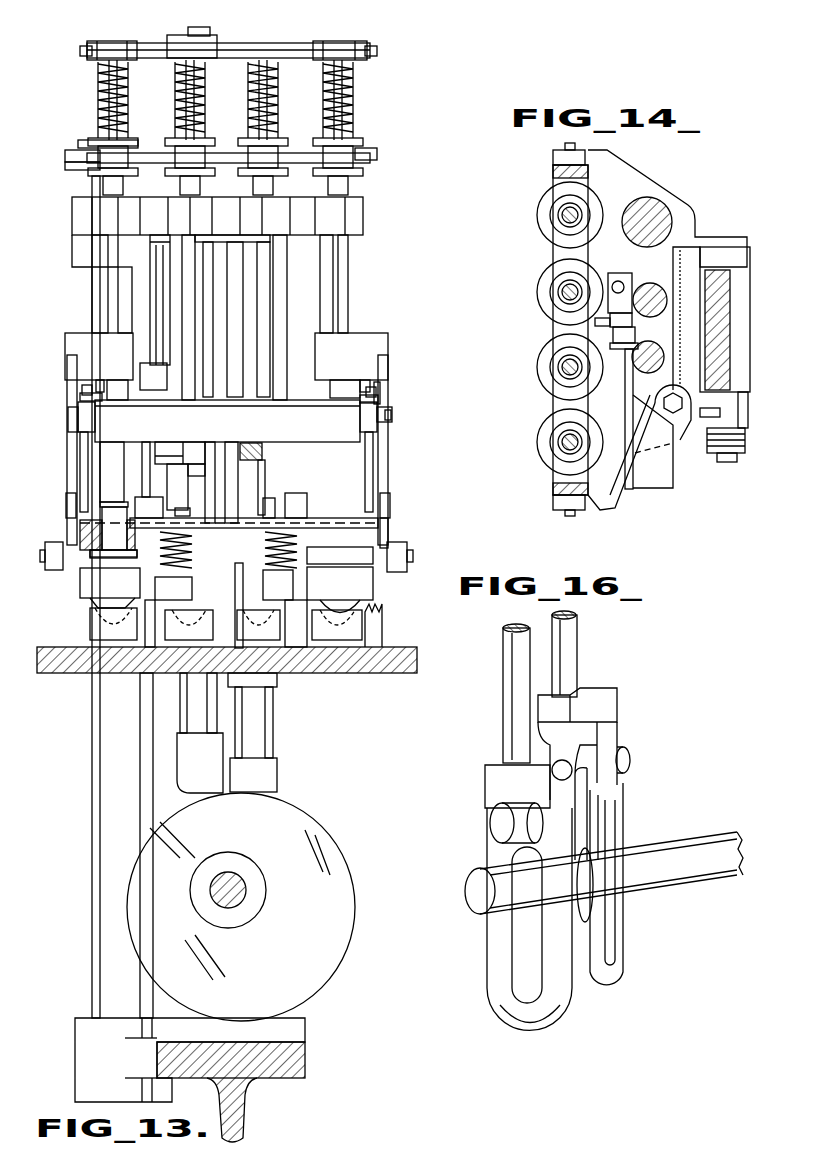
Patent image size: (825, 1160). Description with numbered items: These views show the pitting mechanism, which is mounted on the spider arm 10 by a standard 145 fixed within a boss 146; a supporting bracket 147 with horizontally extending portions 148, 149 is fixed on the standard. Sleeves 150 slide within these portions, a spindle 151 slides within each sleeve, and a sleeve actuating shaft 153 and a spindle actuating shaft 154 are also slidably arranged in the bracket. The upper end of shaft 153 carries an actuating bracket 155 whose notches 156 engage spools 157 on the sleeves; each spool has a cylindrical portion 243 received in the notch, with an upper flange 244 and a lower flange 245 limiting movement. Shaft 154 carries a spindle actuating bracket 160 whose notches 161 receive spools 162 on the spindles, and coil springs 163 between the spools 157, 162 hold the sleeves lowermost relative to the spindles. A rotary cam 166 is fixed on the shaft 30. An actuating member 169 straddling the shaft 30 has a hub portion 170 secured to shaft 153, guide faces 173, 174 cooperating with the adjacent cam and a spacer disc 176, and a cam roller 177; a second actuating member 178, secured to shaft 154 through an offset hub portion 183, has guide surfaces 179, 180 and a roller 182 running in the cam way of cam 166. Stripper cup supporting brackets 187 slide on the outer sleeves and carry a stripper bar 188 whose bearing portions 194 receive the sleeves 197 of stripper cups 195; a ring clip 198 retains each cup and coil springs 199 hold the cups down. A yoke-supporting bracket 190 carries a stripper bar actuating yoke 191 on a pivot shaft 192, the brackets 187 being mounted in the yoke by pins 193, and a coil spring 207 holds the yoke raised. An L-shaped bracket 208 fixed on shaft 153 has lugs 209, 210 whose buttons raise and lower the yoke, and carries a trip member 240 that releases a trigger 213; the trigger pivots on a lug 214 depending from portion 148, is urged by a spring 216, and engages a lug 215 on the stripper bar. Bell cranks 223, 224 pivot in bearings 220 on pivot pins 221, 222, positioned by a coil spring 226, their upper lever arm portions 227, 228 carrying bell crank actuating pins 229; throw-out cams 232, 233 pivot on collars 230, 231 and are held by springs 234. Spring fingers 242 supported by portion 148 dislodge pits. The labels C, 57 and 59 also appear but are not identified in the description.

In FIG. 13, the spindle actuating bracket 160 is at (236, 44).
In FIG. 13, the notches 161 is at (88, 50).
In FIG. 13, the spools 162 is at (115, 42).
In FIG. 13, the coil springs 163 is at (100, 88).
In FIG. 13, the spindle 151 is at (120, 115).
In FIG. 13, the actuating bracket 155 is at (152, 155).
In FIG. 13, the spools 157 is at (168, 175).
In FIG. 13, the notches 156 is at (372, 152).
In FIG. 13, the upper flange 244 is at (78, 142).
In FIG. 13, the cylindrical portion 243 is at (65, 154).
In FIG. 13, the lower flange 245 is at (80, 168).
In FIG. 13, the horizontally extending portion 149 is at (365, 225).
In FIG. 13, the supporting bracket 147 is at (280, 272).
In FIG. 13, the carriage C is at (358, 278).
In FIG. 13, the standard 145 is at (130, 287).
In FIG. 14, the standard 145 is at (660, 205).
In FIG. 13, the spindle actuating shaft 154 is at (207, 298).
In FIG. 14, the spindle actuating shaft 154 is at (665, 280).
In FIG. 16, the spindle actuating shaft 154 is at (578, 652).
In FIG. 13, the sleeve actuating shaft 153 is at (248, 332).
In FIG. 14, the sleeve actuating shaft 153 is at (655, 345).
In FIG. 16, the sleeve actuating shaft 153 is at (508, 706).
In FIG. 13, the sleeves 150 is at (118, 328).
In FIG. 13, the bell crank actuating pins 229 is at (108, 382).
In FIG. 13, the collar 231 is at (97, 382).
In FIG. 13, the throw-out cam 233 is at (82, 387).
In FIG. 13, the upper lever arm portion 228 is at (80, 397).
In FIG. 13, the collar 230 is at (362, 380).
In FIG. 13, the throw-out cam 232 is at (374, 390).
In FIG. 13, the upper lever arm portion 227 is at (376, 398).
In FIG. 13, the springs 234 is at (380, 394).
In FIG. 13, the horizontally extending portion 148 is at (318, 434).
In FIG. 13, the pivot pin 222 is at (80, 415).
In FIG. 13, the bearings 220 is at (70, 418).
In FIG. 13, the pivot pin 221 is at (392, 414).
In FIG. 13, the coil spring 226 is at (392, 412).
In FIG. 13, the stripper cup supporting brackets 187 is at (68, 430).
In FIG. 13, the bell crank 224 is at (82, 458).
In FIG. 13, the bell crank 223 is at (372, 460).
In FIG. 13, the spring fingers 242 is at (124, 458).
In FIG. 14, the spring fingers 242 is at (570, 224).
In FIG. 13, the lug 214 is at (198, 445).
In FIG. 14, the lug 214 is at (632, 258).
In FIG. 13, the spring 216 is at (245, 440).
In FIG. 13, the trigger 213 is at (235, 478).
In FIG. 14, the trigger 213 is at (610, 335).
In FIG. 13, the trip member 240 is at (266, 500).
In FIG. 14, the trip member 240 is at (626, 375).
In FIG. 13, the ring clip 198 is at (135, 500).
In FIG. 13, the stripper bar 188 is at (388, 510).
In FIG. 14, the stripper bar 188 is at (558, 403).
In FIG. 13, the bearing portions 194 is at (78, 522).
In FIG. 13, the stripper bar actuating yoke 191 is at (390, 540).
In FIG. 14, the stripper bar actuating yoke 191 is at (603, 510).
In FIG. 13, the pins 193 is at (50, 560).
In FIG. 14, the pins 193 is at (568, 144).
In FIG. 13, the coil springs 199 is at (95, 550).
In FIG. 13, the stripper cups 195 is at (82, 582).
In FIG. 14, the stripper cups 195 is at (547, 232).
In FIG. 13, the sleeve 197 is at (110, 560).
In FIG. 13, the foot block 59 is at (100, 628).
In FIG. 13, the L-shaped bracket 208 is at (382, 636).
In FIG. 14, the L-shaped bracket 208 is at (660, 490).
In FIG. 13, the base plate 57 is at (417, 660).
In FIG. 13, the hub portion 183 is at (180, 765).
In FIG. 16, the hub portion 183 is at (595, 697).
In FIG. 13, the hub portion 170 is at (277, 786).
In FIG. 16, the hub portion 170 is at (490, 797).
In FIG. 13, the rotary cam 166 is at (352, 942).
In FIG. 13, the shaft 30 is at (233, 880).
In FIG. 16, the shaft 30 is at (470, 890).
In FIG. 13, the boss 146 is at (90, 1040).
In FIG. 13, the spider arm 10 is at (300, 1073).
In FIG. 14, the lug 215 is at (595, 322).
In FIG. 14, the yoke-supporting bracket 190 is at (730, 352).
In FIG. 14, the lug 210 is at (681, 397).
In FIG. 14, the lug 209 is at (695, 450).
In FIG. 14, the coil spring 207 is at (745, 436).
In FIG. 14, the pivot shaft 192 is at (727, 462).
In FIG. 16, the actuating member 178 is at (615, 720).
In FIG. 16, the roller 182 is at (631, 762).
In FIG. 16, the guide face 174 is at (590, 820).
In FIG. 16, the guide surface 180 is at (600, 840).
In FIG. 16, the cam roller 177 is at (492, 830).
In FIG. 16, the spacer disc 176 is at (590, 888).
In FIG. 16, the guide face 173 is at (492, 940).
In FIG. 16, the guide surface 179 is at (623, 960).
In FIG. 16, the actuating member 169 is at (508, 1005).